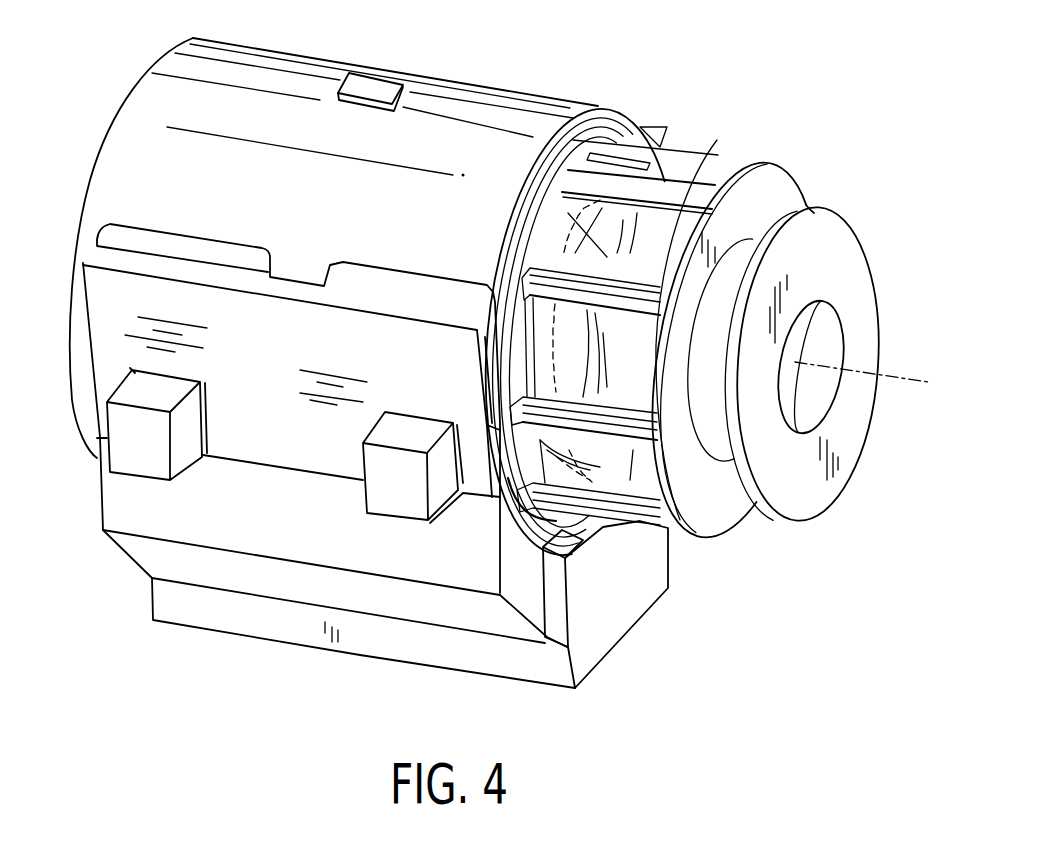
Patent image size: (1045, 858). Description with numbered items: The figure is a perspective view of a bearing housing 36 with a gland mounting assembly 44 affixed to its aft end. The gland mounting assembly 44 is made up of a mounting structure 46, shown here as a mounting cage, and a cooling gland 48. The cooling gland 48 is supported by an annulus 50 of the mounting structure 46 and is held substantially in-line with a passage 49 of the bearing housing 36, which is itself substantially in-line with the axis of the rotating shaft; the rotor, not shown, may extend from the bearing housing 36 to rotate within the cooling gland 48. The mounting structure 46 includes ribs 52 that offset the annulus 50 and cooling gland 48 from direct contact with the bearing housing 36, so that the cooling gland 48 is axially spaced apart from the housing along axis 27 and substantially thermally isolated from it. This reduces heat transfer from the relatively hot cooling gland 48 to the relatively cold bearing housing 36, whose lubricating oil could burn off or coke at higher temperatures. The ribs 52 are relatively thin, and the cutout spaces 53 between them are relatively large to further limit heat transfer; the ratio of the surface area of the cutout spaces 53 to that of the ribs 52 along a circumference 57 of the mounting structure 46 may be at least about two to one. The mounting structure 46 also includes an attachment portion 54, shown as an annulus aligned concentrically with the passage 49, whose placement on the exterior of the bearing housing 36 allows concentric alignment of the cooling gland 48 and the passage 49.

The axis 27 is at (897, 380).
The bearing housing 36 is at (107, 160).
The gland mounting assembly 44 is at (684, 105).
The mounting structure 46 is at (594, 150).
The cooling gland 48 is at (724, 540).
The passage 49 is at (545, 352).
The annulus 50 is at (712, 195).
The ribs 52 is at (637, 520).
The cutout spaces 53 is at (583, 483).
The attachment portion 54 is at (533, 493).
The circumference 57 is at (518, 297).